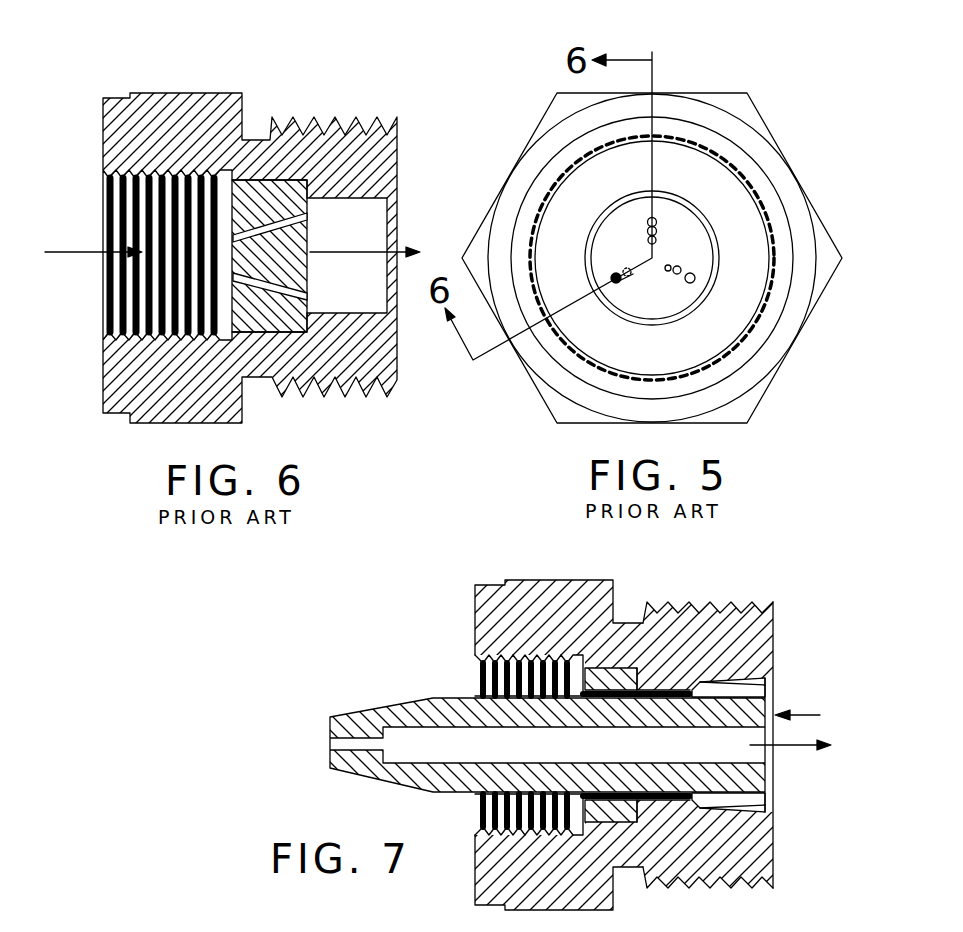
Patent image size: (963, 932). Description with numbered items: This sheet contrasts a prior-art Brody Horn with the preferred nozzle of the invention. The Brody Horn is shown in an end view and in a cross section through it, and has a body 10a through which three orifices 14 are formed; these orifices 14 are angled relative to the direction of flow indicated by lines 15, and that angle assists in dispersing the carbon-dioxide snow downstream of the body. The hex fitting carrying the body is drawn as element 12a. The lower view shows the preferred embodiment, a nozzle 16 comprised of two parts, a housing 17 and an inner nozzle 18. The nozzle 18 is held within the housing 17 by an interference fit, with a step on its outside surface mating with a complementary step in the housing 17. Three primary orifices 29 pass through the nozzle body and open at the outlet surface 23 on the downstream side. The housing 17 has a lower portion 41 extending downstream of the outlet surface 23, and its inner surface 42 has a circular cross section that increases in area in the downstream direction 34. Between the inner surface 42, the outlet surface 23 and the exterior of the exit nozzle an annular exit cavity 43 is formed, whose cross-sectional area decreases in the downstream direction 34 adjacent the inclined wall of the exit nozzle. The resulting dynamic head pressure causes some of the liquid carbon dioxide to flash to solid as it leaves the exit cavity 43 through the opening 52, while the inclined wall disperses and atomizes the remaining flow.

In FIG. 6, the body 10a is at (270, 190).
In FIG. 5, the body 10a is at (688, 247).
In FIG. 6, the hex fitting body 12a is at (342, 347).
In FIG. 5, the hex fitting body 12a is at (826, 256).
In FIG. 6, the orifices 14 is at (306, 216).
In FIG. 5, the orifices 14 is at (655, 216).
In FIG. 6, the lines indicating direction of flow 15 is at (78, 250).
In FIG. 7, the nozzle 16 is at (688, 598).
In FIG. 7, the housing 17 is at (522, 595).
In FIG. 7, the nozzle 18 is at (591, 745).
In FIG. 7, the outlet surface 23 is at (760, 637).
In FIG. 7, the primary orifices 29 is at (628, 690).
In FIG. 7, the downstream direction 34 is at (818, 750).
In FIG. 7, the lower portion 41 is at (763, 862).
In FIG. 7, the inner surface 42 is at (700, 680).
In FIG. 7, the exit cavity 43 is at (742, 803).
In FIG. 7, the opening 52 is at (774, 682).